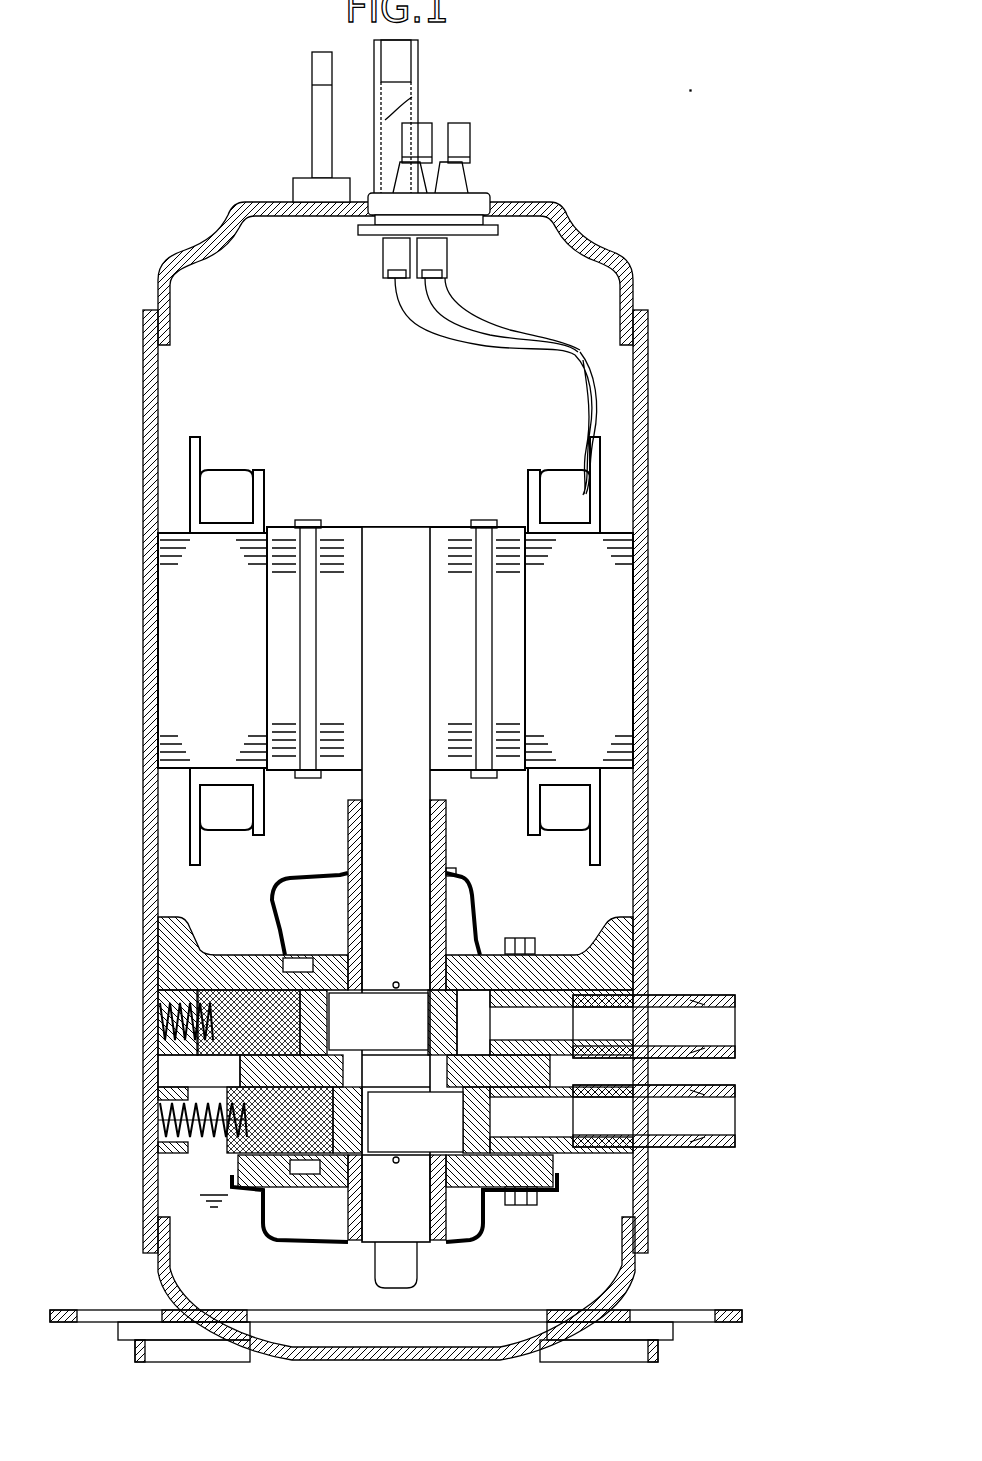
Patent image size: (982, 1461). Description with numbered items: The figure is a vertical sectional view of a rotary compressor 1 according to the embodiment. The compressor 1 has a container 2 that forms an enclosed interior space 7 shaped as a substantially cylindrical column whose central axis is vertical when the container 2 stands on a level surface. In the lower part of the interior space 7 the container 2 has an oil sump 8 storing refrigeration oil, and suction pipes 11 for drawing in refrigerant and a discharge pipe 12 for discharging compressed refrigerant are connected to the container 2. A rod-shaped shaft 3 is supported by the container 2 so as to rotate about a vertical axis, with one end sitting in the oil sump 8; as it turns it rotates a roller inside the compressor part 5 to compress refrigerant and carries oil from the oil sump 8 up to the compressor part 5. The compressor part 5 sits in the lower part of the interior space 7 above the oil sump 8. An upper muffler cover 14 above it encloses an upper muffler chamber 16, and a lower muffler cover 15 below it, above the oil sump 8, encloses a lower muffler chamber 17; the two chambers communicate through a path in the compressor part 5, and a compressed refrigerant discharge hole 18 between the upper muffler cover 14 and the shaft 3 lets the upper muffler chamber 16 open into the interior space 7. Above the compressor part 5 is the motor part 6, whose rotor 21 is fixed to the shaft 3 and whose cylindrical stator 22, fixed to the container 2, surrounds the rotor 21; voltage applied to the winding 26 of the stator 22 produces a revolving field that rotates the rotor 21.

The compressor 1 is at (694, 96).
The container 2 is at (198, 226).
The shaft 3 is at (360, 788).
The compressor part 5 is at (200, 1178).
The motor part 6 is at (214, 426).
The interior space 7 is at (270, 243).
The oil sump 8 is at (195, 1272).
The suction pipes 11 is at (742, 1088).
The discharge pipe 12 is at (420, 57).
The upper muffler cover 14 is at (478, 872).
The lower muffler cover 15 is at (470, 1245).
The upper muffler chamber 16 is at (462, 918).
The lower muffler chamber 17 is at (470, 1213).
The compressed refrigerant discharge hole 18 is at (454, 872).
The rotor 21 is at (424, 550).
The stator 22 is at (530, 452).
The winding 26 is at (222, 490).